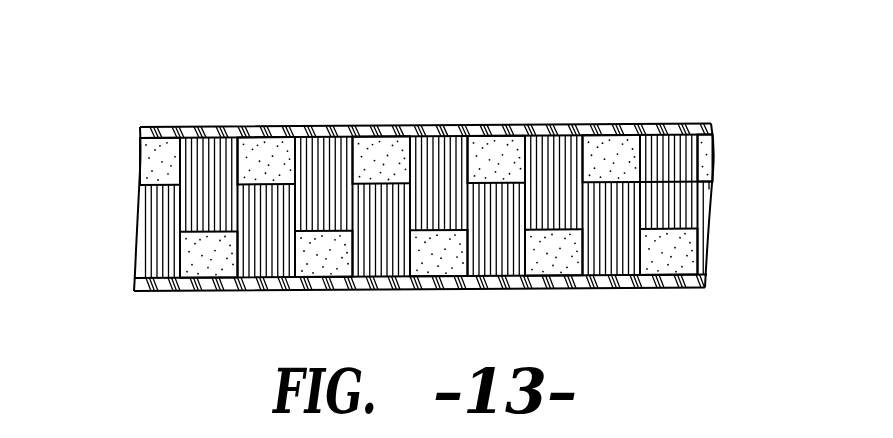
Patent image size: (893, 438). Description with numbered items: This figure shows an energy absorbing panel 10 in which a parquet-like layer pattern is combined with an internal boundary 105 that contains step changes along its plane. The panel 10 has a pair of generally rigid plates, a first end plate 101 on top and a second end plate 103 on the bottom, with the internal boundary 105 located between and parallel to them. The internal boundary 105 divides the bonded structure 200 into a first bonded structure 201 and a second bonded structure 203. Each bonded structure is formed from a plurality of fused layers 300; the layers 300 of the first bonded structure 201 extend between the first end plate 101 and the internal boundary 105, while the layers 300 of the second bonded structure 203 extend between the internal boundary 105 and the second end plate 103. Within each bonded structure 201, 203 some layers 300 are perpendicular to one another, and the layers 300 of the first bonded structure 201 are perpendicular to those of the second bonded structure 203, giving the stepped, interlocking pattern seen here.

The energy absorbing panel 10 is at (438, 175).
The first end plate 101 is at (414, 134).
The second end plate 103 is at (558, 283).
The internal boundary 105 is at (724, 139).
The bonded structure 200 is at (438, 179).
The first bonded structure 201 is at (118, 142).
The second bonded structure 203 is at (120, 192).
The fused layers 300 is at (316, 150).